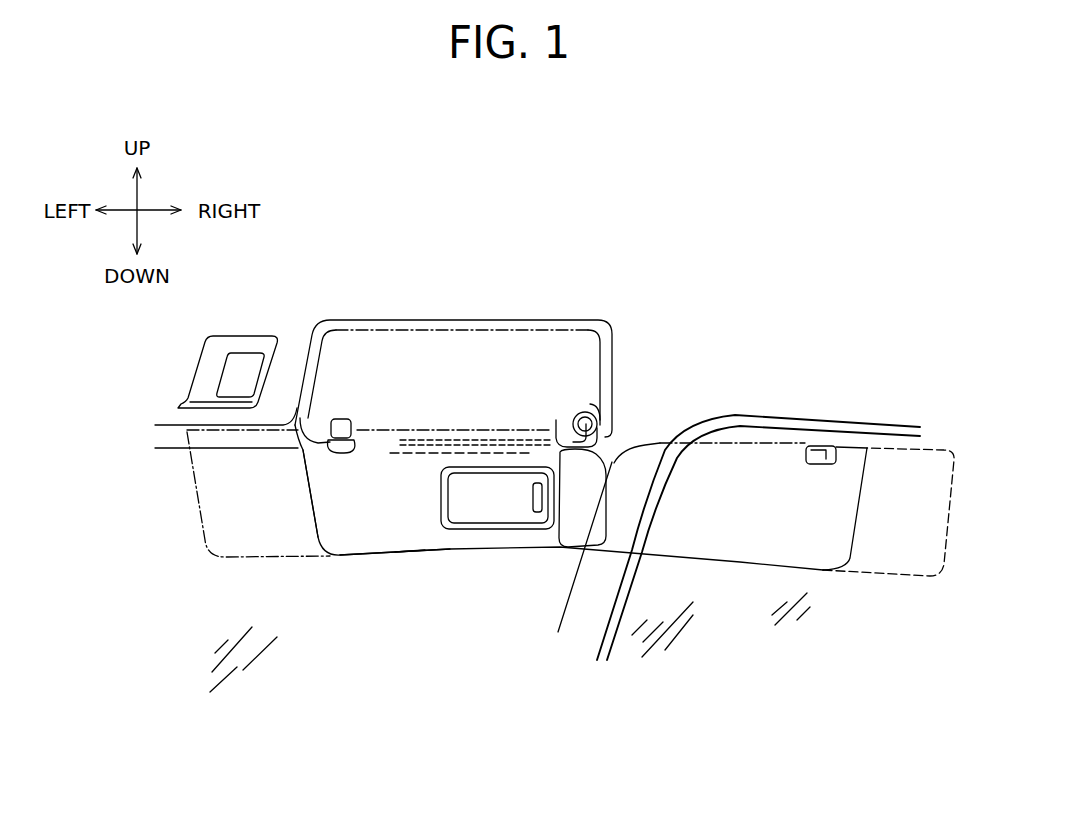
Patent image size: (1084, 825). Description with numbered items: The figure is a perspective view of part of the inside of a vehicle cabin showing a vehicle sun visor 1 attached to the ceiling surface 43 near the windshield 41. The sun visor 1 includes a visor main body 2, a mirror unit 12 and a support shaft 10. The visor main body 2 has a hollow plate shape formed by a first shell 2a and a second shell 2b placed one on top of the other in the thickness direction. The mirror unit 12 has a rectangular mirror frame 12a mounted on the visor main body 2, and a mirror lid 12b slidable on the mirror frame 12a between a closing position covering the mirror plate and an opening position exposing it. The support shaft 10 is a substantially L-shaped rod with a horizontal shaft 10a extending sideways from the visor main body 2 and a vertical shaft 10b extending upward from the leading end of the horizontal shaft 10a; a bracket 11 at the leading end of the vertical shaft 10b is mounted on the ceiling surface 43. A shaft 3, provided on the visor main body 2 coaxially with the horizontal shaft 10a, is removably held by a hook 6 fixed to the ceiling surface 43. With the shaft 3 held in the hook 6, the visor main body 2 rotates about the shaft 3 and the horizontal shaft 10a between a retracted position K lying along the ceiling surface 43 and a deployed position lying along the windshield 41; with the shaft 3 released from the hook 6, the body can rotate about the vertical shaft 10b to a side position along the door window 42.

The vehicle sun visor 1 is at (306, 534).
The visor main body 2 is at (346, 566).
The first shell 2a is at (380, 533).
The second shell 2b is at (317, 540).
The shaft 3 is at (353, 419).
The hook 6 is at (330, 426).
The support shaft 10 is at (562, 420).
The horizontal shaft 10a is at (590, 410).
The bracket 11 is at (612, 418).
The vertical shaft 10b is at (635, 447).
The mirror unit 12 is at (497, 496).
The mirror frame 12a is at (514, 525).
The mirror lid 12b is at (476, 508).
The windshield 41 is at (234, 655).
The door window 42 is at (730, 622).
The ceiling surface 43 is at (227, 330).
The retracted position K is at (445, 370).